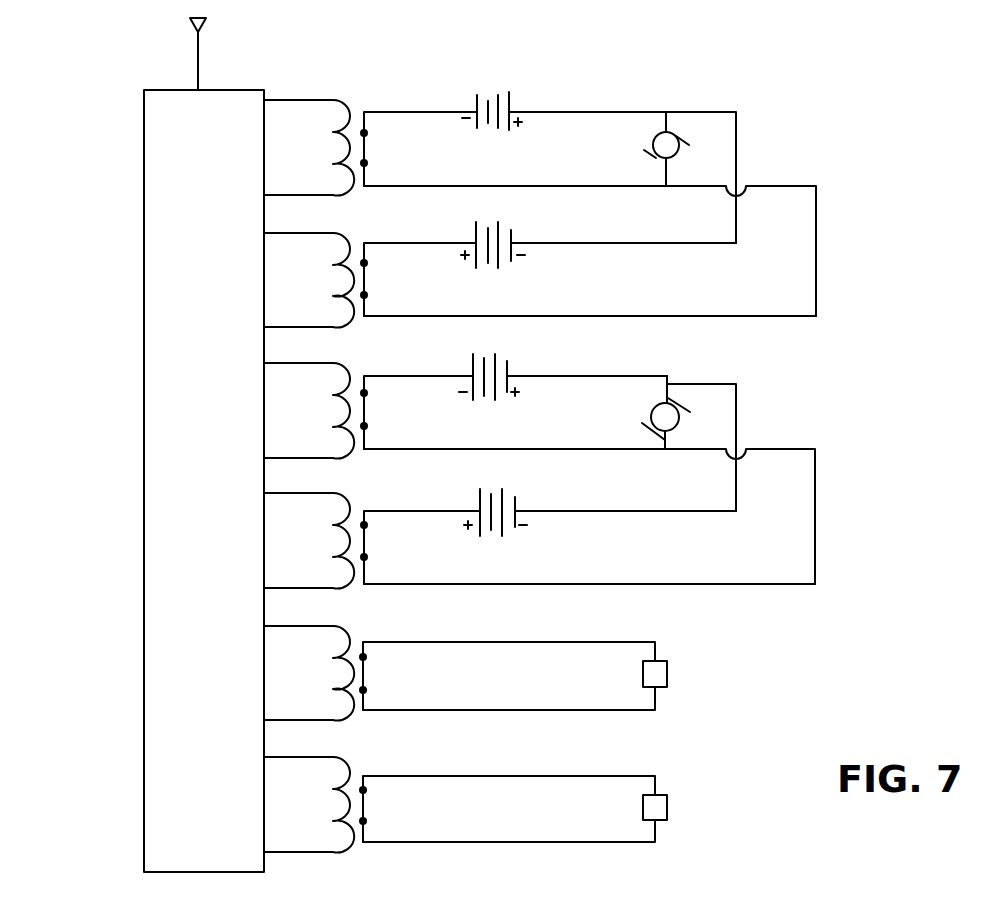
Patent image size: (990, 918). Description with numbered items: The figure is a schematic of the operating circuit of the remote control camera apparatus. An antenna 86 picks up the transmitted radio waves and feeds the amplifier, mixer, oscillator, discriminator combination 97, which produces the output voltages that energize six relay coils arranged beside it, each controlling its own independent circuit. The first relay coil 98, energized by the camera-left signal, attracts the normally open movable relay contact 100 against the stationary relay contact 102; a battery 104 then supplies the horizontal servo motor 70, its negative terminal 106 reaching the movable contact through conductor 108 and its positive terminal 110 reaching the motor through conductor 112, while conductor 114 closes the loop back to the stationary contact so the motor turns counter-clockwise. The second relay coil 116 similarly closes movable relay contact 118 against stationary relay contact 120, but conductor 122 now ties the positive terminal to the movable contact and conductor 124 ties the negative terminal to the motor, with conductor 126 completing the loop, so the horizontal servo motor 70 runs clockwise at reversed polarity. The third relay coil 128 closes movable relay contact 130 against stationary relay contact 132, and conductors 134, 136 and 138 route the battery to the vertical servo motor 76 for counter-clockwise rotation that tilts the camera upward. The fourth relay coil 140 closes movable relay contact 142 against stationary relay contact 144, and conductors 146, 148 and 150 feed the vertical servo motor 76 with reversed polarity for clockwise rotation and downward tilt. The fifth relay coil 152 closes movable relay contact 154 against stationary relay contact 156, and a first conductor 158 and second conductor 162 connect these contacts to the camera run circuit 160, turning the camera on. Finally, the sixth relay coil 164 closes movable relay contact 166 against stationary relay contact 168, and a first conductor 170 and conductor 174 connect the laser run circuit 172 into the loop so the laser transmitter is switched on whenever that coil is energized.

The horizontal servo motor 70 is at (679, 148).
The vertical servo motor 76 is at (679, 420).
The antenna 86 is at (206, 21).
The amplifier, mixer, oscillator, discriminator combination 97 is at (150, 90).
The first relay coil 98 is at (333, 154).
The movable relay contact 100 is at (364, 133).
The stationary relay contact 102 is at (364, 163).
The battery 104 is at (486, 94).
The negative terminal 106 is at (475, 108).
The conductor 108 is at (380, 112).
The positive terminal 110 is at (509, 113).
The conductor 112 is at (588, 112).
The conductor 114 is at (542, 186).
The second relay coil 116 is at (338, 282).
The movable relay contact 118 is at (364, 263).
The stationary relay contact 120 is at (364, 295).
The conductor 122 is at (374, 243).
The conductor 124 is at (592, 244).
The conductor 126 is at (556, 317).
The third relay coil 128 is at (336, 411).
The movable relay contact 130 is at (364, 393).
The stationary relay contact 132 is at (364, 426).
The conductor 134 is at (376, 376).
The conductor 136 is at (596, 376).
The conductor 138 is at (556, 449).
The fourth relay coil 140 is at (334, 540).
The movable relay contact 142 is at (364, 525).
The stationary relay contact 144 is at (364, 557).
The conductor 146 is at (372, 511).
The conductor 148 is at (618, 511).
The conductor 150 is at (610, 584).
The fifth relay coil 152 is at (335, 672).
The movable relay contact 154 is at (363, 657).
The stationary relay contact 156 is at (363, 690).
The first conductor 158 is at (511, 642).
The camera run circuit 160 is at (668, 672).
The second conductor 162 is at (510, 710).
The sixth relay coil 164 is at (338, 805).
The movable relay contact 166 is at (363, 790).
The stationary relay contact 168 is at (363, 821).
The first conductor 170 is at (528, 776).
The laser run circuit 172 is at (668, 806).
The conductor 174 is at (515, 842).